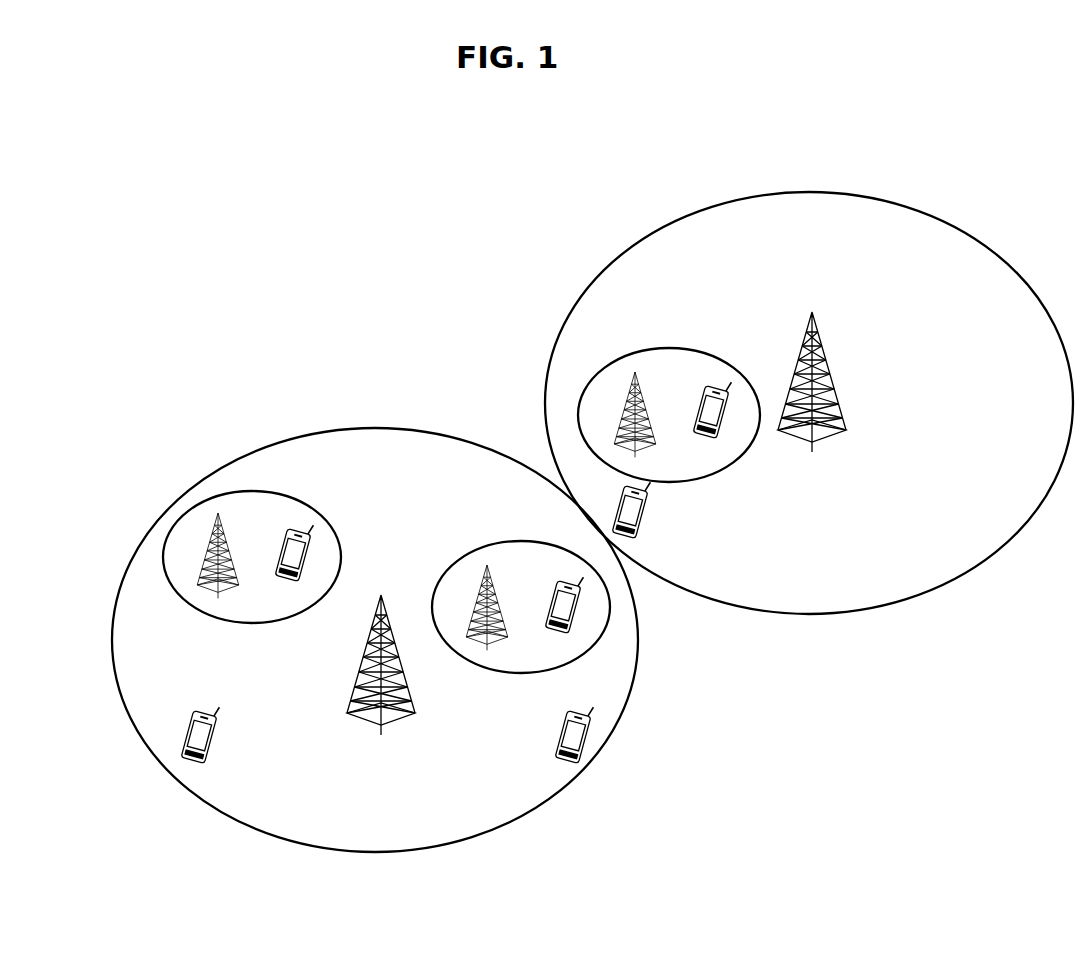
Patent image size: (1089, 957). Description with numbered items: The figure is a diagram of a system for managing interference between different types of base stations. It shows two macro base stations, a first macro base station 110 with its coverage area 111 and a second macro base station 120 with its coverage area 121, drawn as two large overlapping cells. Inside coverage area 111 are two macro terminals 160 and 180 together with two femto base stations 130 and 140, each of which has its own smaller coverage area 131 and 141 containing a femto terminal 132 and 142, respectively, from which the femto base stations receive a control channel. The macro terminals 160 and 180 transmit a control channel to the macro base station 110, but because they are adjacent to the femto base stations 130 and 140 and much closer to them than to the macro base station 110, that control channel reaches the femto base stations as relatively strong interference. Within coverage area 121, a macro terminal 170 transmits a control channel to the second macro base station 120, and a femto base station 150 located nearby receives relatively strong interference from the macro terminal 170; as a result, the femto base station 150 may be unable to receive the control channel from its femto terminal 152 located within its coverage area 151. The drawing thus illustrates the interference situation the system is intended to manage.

The first macro base station 110 is at (398, 714).
The coverage area 111 is at (375, 428).
The second macro base station 120 is at (830, 376).
The coverage area 121 is at (810, 192).
The femto base station 130 is at (228, 586).
The coverage area 131 is at (296, 492).
The femto terminal 132 is at (307, 552).
The femto base station 140 is at (497, 640).
The coverage area 141 is at (519, 542).
The femto terminal 142 is at (560, 633).
The femto base station 150 is at (632, 390).
The coverage area 151 is at (675, 348).
The femto terminal 152 is at (713, 388).
The macro terminal 160 is at (558, 739).
The macro terminal 170 is at (645, 515).
The macro terminal 180 is at (213, 737).